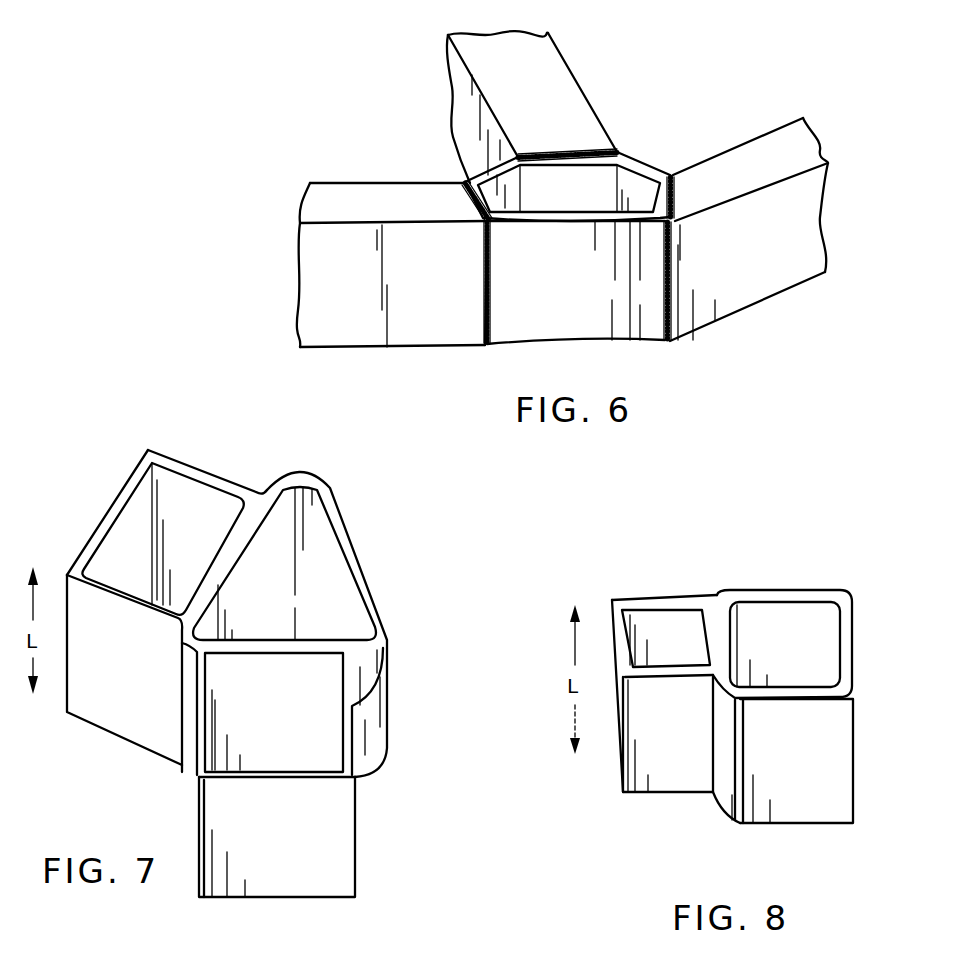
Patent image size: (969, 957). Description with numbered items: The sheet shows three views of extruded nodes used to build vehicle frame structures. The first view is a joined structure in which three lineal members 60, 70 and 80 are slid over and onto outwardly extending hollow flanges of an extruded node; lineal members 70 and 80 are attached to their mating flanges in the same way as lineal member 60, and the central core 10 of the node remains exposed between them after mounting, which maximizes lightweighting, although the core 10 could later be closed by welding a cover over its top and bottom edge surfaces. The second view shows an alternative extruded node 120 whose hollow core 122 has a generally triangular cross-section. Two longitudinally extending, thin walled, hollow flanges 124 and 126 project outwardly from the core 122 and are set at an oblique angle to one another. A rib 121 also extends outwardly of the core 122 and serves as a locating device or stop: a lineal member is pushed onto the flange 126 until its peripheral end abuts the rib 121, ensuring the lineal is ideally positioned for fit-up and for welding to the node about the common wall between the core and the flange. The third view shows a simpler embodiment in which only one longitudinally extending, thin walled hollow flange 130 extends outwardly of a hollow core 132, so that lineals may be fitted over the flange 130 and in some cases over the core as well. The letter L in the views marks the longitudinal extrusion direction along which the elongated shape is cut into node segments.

In FIG. 6, the central core 10 is at (602, 185).
In FIG. 6, the lineal member 60 is at (387, 184).
In FIG. 6, the lineal member 70 is at (586, 90).
In FIG. 6, the lineal member 80 is at (748, 310).
In FIG. 7, the extruded node 120 is at (278, 662).
In FIG. 7, the rib 121 is at (180, 735).
In FIG. 7, the hollow core 122 is at (337, 587).
In FIG. 7, the hollow flange 124 is at (179, 460).
In FIG. 7, the hollow flange 126 is at (356, 798).
In FIG. 8, the hollow flange 130 is at (668, 793).
In FIG. 8, the second tubular portion 132 is at (775, 612).